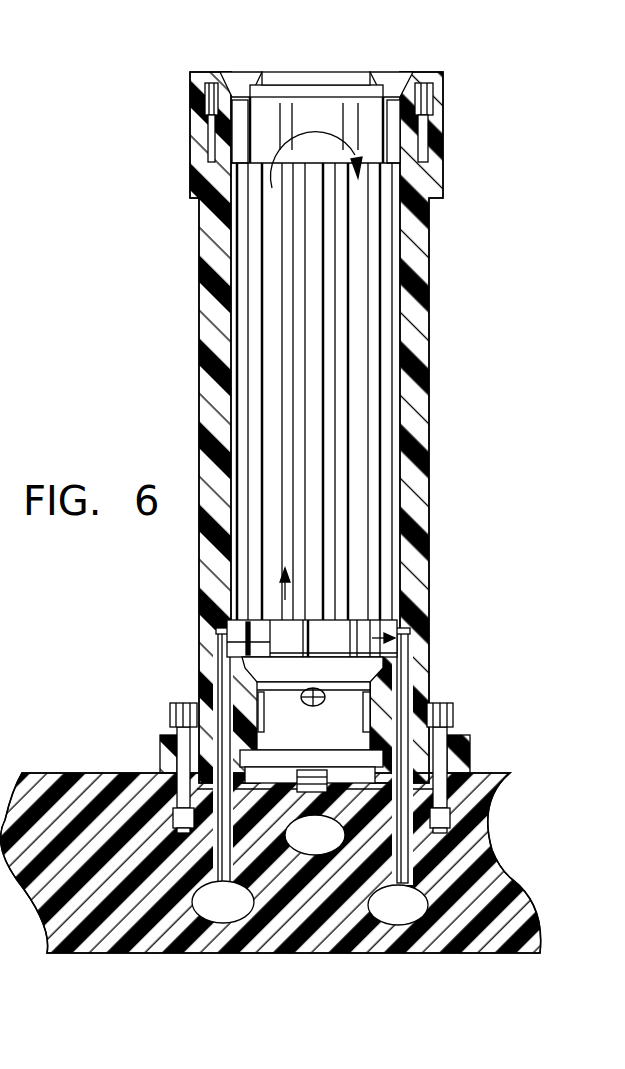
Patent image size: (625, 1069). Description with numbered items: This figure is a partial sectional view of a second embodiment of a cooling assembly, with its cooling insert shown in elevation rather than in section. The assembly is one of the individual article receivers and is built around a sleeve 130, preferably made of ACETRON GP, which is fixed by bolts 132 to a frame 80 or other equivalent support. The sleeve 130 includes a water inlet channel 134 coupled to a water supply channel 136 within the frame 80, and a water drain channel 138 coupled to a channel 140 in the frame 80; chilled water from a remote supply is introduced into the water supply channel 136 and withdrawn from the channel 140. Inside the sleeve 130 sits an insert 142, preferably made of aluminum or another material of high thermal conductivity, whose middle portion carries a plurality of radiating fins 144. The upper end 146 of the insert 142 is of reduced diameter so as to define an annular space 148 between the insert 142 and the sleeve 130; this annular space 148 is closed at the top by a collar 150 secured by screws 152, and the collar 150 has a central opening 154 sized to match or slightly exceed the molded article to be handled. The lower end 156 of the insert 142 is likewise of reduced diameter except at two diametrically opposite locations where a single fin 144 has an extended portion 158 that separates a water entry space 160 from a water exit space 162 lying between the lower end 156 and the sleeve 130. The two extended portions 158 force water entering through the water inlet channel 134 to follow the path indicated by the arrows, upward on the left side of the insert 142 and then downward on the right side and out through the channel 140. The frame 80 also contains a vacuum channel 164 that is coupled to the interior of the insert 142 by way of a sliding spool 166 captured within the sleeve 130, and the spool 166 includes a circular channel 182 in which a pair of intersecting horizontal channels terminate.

The frame 80 is at (481, 779).
The sleeve 130 is at (415, 500).
The bolts 132 is at (183, 700).
The water inlet channel 134 is at (213, 678).
The water supply channel 136 is at (222, 908).
The water drain channel 138 is at (412, 673).
The channel 140 is at (382, 905).
The insert 142 is at (380, 413).
The radiating fins 144 is at (367, 302).
The upper end 146 is at (310, 113).
The annular space 148 is at (427, 183).
The collar 150 is at (255, 72).
The screws 152 is at (425, 72).
The central opening 154 is at (285, 72).
The lower end 156 is at (283, 648).
The extended portion 158 is at (310, 630).
The water entry space 160 is at (268, 630).
The water exit space 162 is at (343, 627).
The vacuum channel 164 is at (320, 828).
The sliding spool 166 is at (350, 720).
The circular channel 182 is at (275, 697).